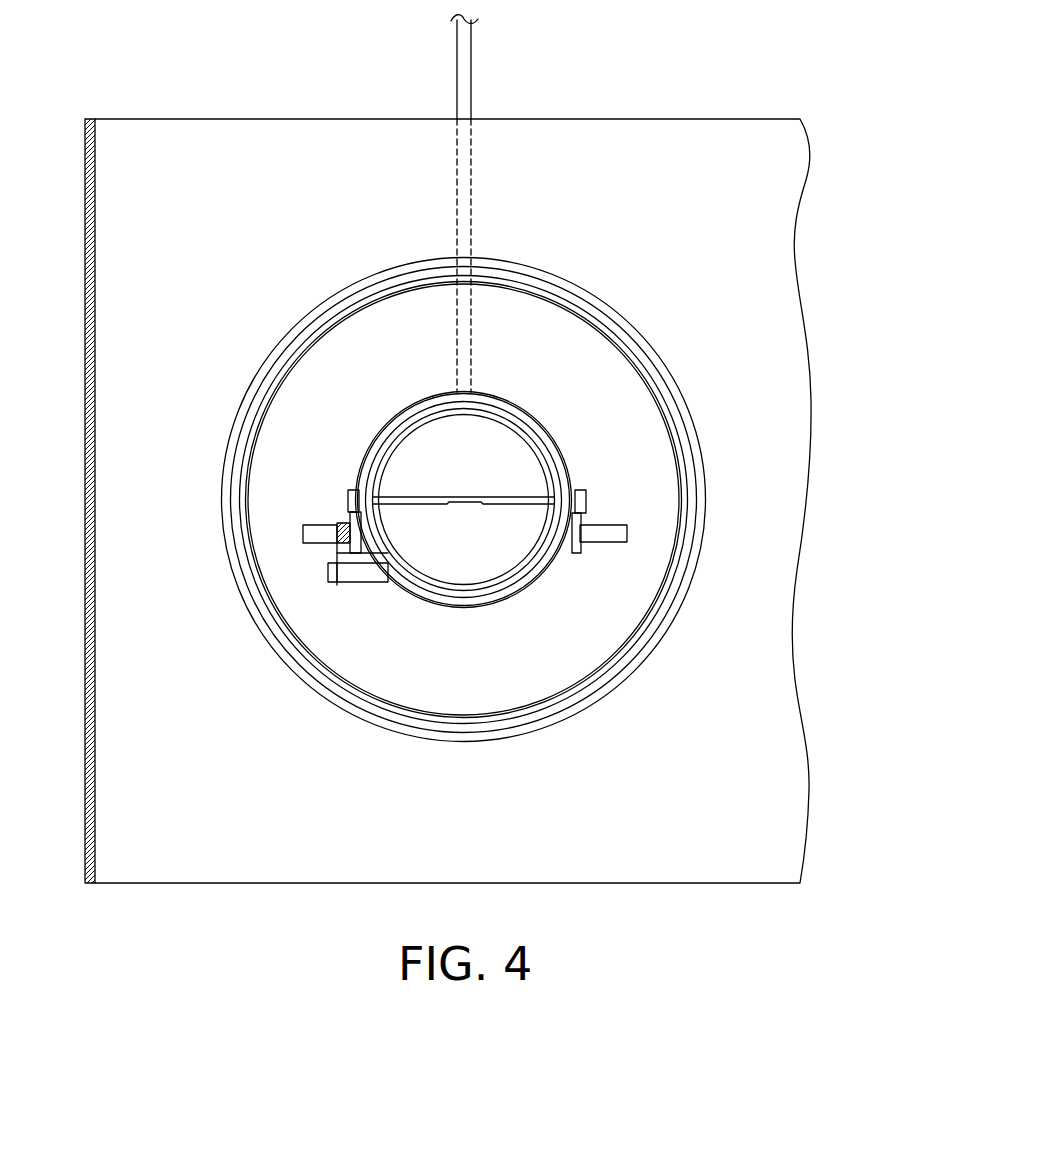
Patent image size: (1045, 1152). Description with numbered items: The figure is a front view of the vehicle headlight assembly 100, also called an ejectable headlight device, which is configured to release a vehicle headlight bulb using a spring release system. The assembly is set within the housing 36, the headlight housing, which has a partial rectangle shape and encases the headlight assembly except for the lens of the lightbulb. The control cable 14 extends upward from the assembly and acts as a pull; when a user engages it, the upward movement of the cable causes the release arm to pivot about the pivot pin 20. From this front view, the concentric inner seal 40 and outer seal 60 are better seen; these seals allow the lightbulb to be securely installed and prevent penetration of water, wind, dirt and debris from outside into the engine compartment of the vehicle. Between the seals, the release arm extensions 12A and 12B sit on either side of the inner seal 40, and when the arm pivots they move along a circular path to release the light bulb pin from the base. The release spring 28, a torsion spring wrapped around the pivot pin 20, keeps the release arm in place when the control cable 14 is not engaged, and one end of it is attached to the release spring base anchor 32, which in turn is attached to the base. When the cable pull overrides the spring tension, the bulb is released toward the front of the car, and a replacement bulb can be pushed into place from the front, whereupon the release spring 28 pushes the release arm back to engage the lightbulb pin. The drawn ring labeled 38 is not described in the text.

The vehicle headlight assembly 100 is at (229, 944).
The housing 36 is at (650, 866).
The control cable 14 is at (471, 80).
The outer seal 60 is at (635, 662).
The mounting ring 38 is at (572, 647).
The inner seal 40 is at (540, 422).
The release arm extension 12A is at (573, 486).
The release arm extension 12B is at (348, 490).
The pivot pin 20 is at (618, 535).
The release spring 28 is at (337, 547).
The release spring base anchor 32 is at (337, 582).